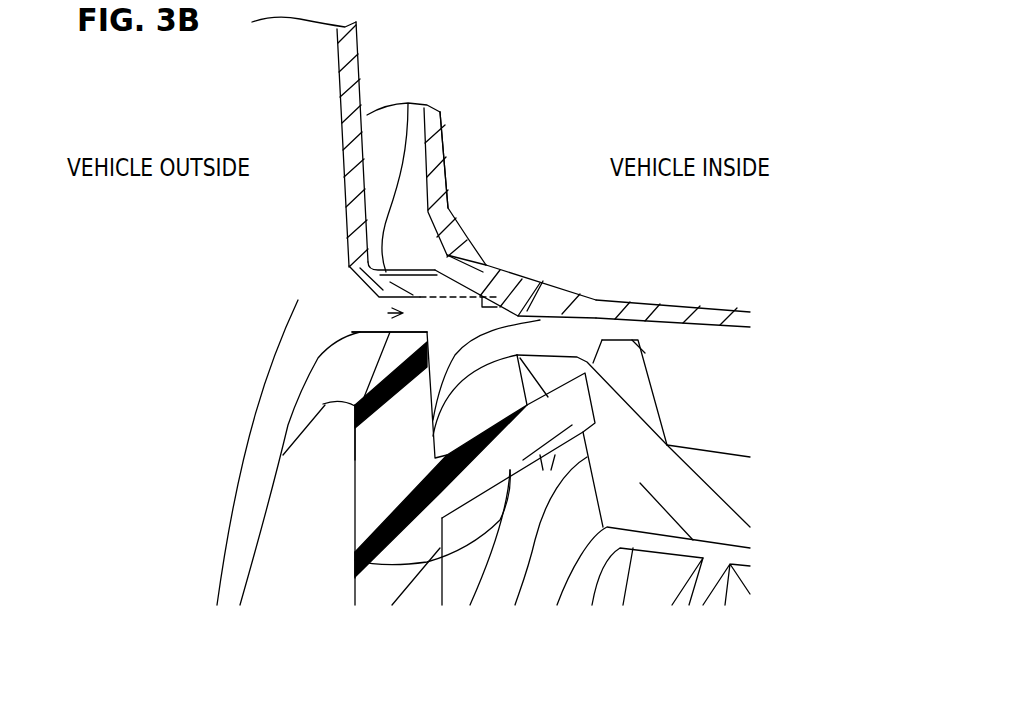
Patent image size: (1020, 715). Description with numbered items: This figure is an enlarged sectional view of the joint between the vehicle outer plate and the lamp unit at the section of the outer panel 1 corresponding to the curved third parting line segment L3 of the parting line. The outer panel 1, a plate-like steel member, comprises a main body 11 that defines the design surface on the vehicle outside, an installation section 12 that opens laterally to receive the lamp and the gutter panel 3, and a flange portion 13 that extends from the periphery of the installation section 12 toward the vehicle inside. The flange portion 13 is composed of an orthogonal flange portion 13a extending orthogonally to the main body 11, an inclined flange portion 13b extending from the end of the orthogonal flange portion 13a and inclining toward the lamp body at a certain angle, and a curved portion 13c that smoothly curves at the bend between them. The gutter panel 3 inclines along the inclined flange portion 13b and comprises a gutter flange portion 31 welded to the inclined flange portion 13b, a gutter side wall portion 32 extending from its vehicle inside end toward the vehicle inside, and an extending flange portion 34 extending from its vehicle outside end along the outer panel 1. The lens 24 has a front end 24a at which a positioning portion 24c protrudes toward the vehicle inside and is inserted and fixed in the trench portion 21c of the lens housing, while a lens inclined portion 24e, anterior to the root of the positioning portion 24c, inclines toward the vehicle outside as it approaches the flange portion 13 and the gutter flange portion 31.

The outer panel 1 is at (310, 142).
The main body 11 is at (327, 90).
The installation section 12 is at (350, 283).
The third parting line segment L3 is at (388, 313).
The flange portion 13 is at (613, 67).
The orthogonal flange portion 13a is at (408, 104).
The inclined flange portion 13b is at (470, 293).
The curved portion 13c is at (447, 267).
The extending flange portion 34 is at (445, 145).
The gutter panel 3 is at (618, 279).
The gutter flange portion 31 is at (517, 288).
The gutter side wall portion 32 is at (673, 300).
The lens 24 is at (347, 452).
The front end of the lens 24a is at (352, 453).
The positioning portion 24c is at (355, 557).
The lens inclined portion 24e is at (438, 434).
The trench portion 21c is at (593, 417).